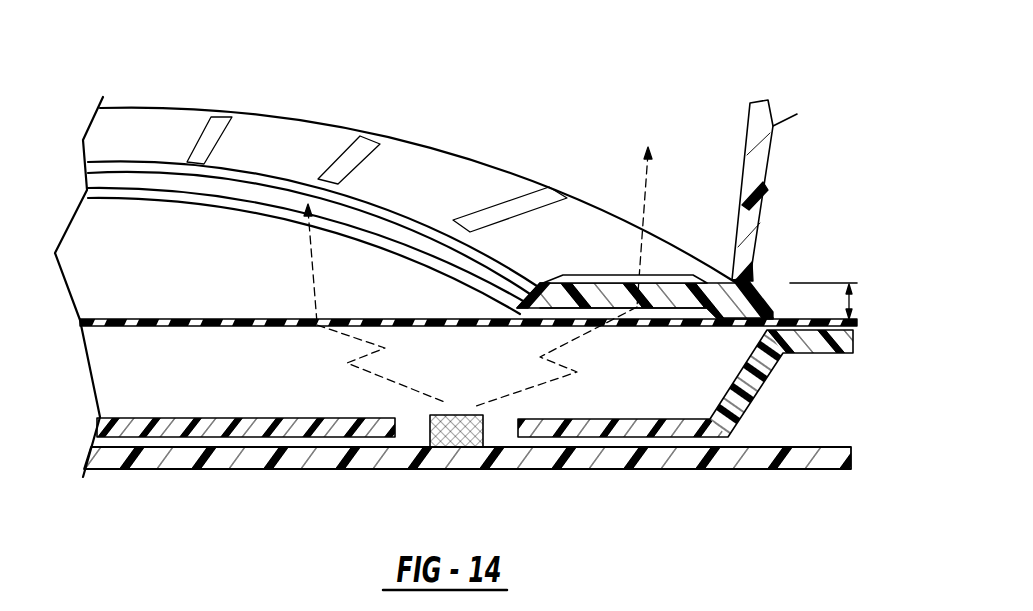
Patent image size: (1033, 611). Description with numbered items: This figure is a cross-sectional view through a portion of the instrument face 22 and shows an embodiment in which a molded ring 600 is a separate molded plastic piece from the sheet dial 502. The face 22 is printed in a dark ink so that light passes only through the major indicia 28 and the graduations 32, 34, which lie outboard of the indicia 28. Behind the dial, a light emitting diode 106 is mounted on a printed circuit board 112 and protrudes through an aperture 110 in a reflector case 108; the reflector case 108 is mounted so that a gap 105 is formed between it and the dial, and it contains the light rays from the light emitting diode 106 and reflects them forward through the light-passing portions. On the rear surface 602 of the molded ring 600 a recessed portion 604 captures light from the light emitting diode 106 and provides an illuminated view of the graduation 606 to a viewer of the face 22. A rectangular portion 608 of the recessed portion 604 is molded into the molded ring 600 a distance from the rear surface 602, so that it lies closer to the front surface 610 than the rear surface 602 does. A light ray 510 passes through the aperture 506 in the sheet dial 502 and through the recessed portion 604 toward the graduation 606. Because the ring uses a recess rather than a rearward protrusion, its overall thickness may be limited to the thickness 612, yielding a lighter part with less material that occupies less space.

The face 22 is at (236, 289).
The major indicia 28 is at (147, 222).
The graduation 32 is at (350, 140).
The graduation 34 is at (224, 135).
The gap 105 is at (134, 394).
The light emitting diode 106 is at (484, 430).
The reflector case 108 is at (752, 384).
The aperture 110 is at (397, 428).
The printed circuit board 112 is at (594, 468).
The sheet dial 502 is at (100, 325).
The aperture 506 is at (565, 322).
The light ray 510 is at (645, 203).
The molded ring 600 is at (424, 143).
The rear surface 602 is at (716, 319).
The recessed portion 604 is at (672, 308).
The graduation 606 is at (727, 278).
The rectangular portion 608 is at (636, 309).
The front surface 610 is at (408, 201).
The thickness 612 is at (845, 301).